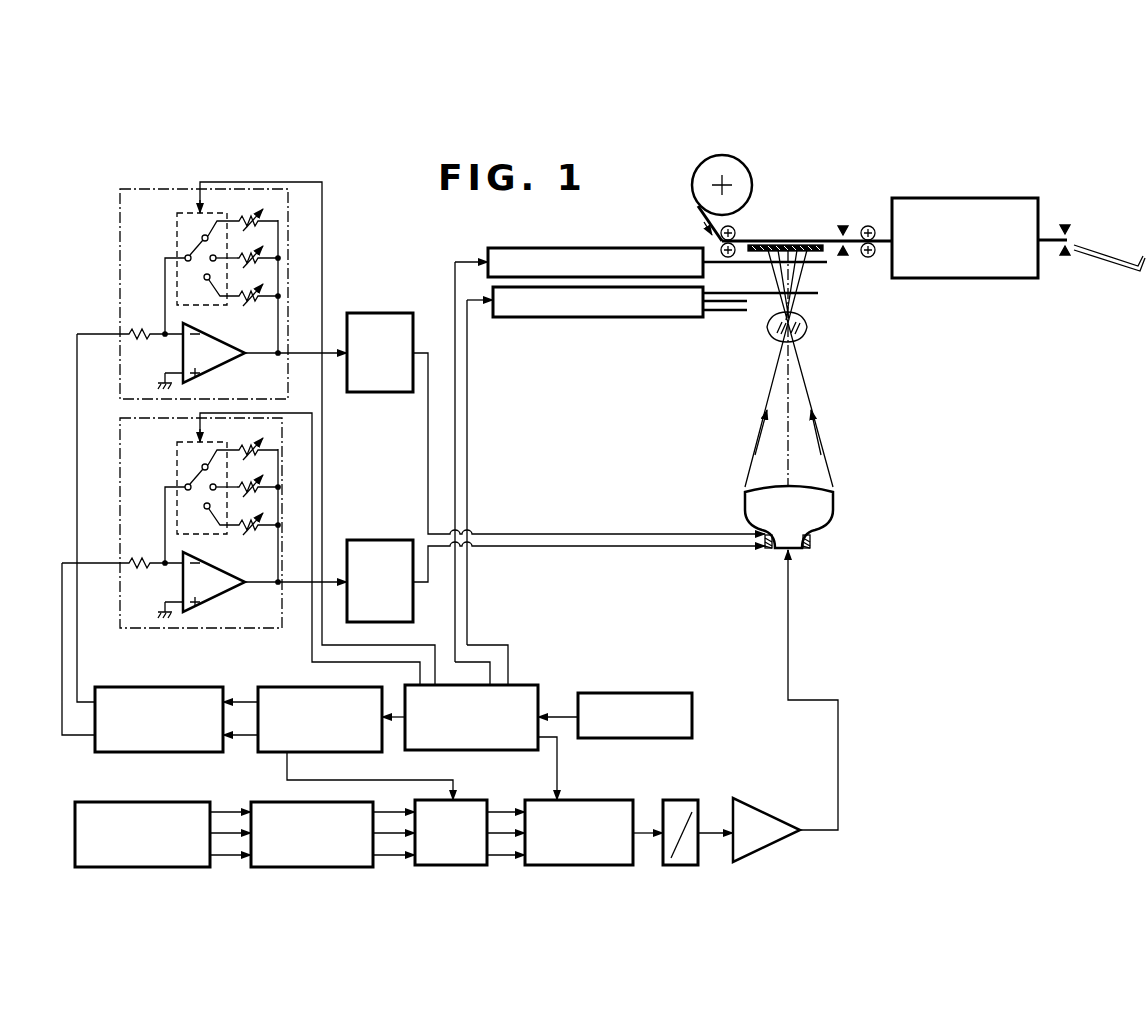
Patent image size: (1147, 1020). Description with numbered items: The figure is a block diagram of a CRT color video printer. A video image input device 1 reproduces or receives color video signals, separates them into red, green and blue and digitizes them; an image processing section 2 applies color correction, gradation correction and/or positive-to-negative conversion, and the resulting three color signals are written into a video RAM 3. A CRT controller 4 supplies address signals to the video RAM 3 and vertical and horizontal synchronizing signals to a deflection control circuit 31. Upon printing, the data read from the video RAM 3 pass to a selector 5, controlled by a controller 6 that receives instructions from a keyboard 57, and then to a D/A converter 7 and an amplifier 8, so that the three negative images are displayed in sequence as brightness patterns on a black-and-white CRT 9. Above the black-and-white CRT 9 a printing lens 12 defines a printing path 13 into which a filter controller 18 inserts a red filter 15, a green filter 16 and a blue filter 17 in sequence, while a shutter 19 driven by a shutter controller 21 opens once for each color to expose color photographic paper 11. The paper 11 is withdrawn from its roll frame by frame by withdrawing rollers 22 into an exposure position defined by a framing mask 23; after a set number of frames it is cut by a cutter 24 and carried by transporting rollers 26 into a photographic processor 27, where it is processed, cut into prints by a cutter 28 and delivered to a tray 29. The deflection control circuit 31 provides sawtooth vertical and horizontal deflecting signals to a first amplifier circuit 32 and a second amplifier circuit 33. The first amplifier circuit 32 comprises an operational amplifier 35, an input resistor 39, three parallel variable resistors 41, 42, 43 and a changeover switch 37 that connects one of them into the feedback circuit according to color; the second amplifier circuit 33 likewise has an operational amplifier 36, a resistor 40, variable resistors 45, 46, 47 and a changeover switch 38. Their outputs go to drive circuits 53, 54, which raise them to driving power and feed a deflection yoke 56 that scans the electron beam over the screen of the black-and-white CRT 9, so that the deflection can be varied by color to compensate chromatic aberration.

The video image input device 1 is at (137, 802).
The image processing section 2 is at (252, 802).
The video RAM 3 is at (482, 800).
The CRT controller 4 is at (288, 687).
The selector 5 is at (585, 800).
The controller 6 is at (525, 685).
The D/A converter 7 is at (681, 800).
The amplifier 8 is at (755, 804).
The black-and-white CRT 9 is at (822, 512).
The color photographic paper 11 is at (702, 218).
The printing lens 12 is at (808, 326).
The printing path 13 is at (790, 456).
The red filter 15 is at (808, 292).
The green filter 16 is at (714, 312).
The blue filter 17 is at (738, 315).
The filter controller 18 is at (600, 317).
The shutter 19 is at (765, 278).
The shutter controller 21 is at (592, 248).
The withdrawing rollers 22 is at (736, 231).
The framing mask 23 is at (818, 244).
The cutter 24 is at (843, 224).
The transporting rollers 26 is at (868, 225).
The photographic processor 27 is at (968, 280).
The cutter 28 is at (1065, 224).
The tray 29 is at (1102, 254).
The deflection control circuit 31 is at (157, 687).
The first amplifier circuit 32 is at (303, 203).
The second amplifier circuit 33 is at (297, 433).
The operational amplifier 35 is at (223, 350).
The operational amplifier 36 is at (223, 579).
The changeover switch 37 is at (175, 224).
The changeover switch 38 is at (175, 455).
The resistor 39 is at (146, 333).
The resistor 40 is at (146, 562).
The variable resistor 41 is at (262, 224).
The variable resistor 42 is at (262, 262).
The variable resistor 43 is at (262, 300).
The variable resistor 45 is at (262, 453).
The variable resistor 46 is at (262, 491).
The variable resistor 47 is at (262, 529).
The drive circuit 53 is at (383, 313).
The drive circuit 54 is at (383, 540).
The deflection yoke 56 is at (768, 552).
The keyboard 57 is at (627, 693).